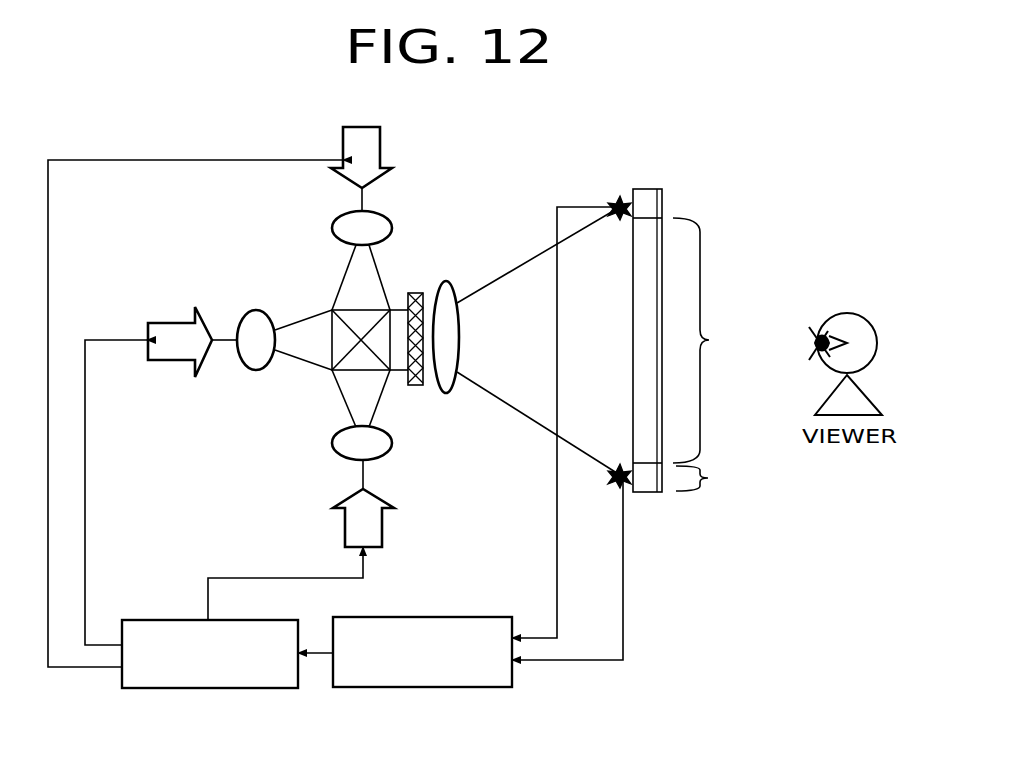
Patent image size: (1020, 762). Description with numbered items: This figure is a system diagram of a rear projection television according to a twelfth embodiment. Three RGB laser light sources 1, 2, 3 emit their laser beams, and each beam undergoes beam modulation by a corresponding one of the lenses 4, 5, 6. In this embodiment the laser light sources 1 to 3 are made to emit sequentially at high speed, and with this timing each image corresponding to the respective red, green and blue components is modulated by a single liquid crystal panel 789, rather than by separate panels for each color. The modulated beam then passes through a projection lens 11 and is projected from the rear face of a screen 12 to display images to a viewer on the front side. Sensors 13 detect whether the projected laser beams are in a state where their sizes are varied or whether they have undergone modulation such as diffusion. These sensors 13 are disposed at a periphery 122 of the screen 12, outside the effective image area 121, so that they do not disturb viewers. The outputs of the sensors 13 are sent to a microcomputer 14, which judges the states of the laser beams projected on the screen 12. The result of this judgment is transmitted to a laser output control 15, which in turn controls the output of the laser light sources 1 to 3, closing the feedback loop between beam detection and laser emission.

The laser light source 1 is at (172, 323).
The laser light source 2 is at (380, 150).
The laser light source 3 is at (382, 522).
The lens 4 is at (256, 311).
The lens 5 is at (374, 212).
The lens 6 is at (392, 450).
The liquid crystal panel 789 is at (420, 292).
The projection lens 11 is at (452, 393).
The screen 12 is at (643, 492).
The sensors 13 is at (616, 202).
The microcomputer 14 is at (428, 616).
The laser output control 15 is at (170, 618).
The effective image area 121 is at (720, 340).
The periphery 122 is at (719, 479).